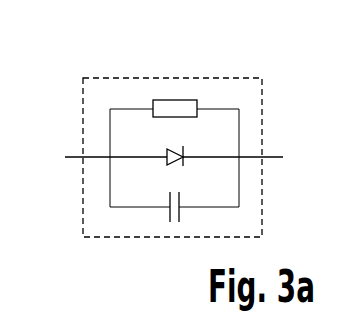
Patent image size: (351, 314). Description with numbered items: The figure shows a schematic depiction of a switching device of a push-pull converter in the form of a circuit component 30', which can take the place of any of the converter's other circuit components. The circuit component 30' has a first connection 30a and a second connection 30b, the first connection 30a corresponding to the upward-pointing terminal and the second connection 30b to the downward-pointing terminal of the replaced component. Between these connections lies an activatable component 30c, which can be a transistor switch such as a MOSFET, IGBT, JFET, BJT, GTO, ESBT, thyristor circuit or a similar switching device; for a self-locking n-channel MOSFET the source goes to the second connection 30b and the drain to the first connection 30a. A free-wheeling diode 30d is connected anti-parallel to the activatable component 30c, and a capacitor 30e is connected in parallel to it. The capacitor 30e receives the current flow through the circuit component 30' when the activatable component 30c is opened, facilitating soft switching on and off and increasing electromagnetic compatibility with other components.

The circuit component 30' is at (172, 128).
The first connection 30a is at (272, 155).
The second connection 30b is at (73, 155).
The activatable component 30c is at (180, 100).
The free-wheeling diode 30d is at (185, 160).
The capacitor 30e is at (168, 215).